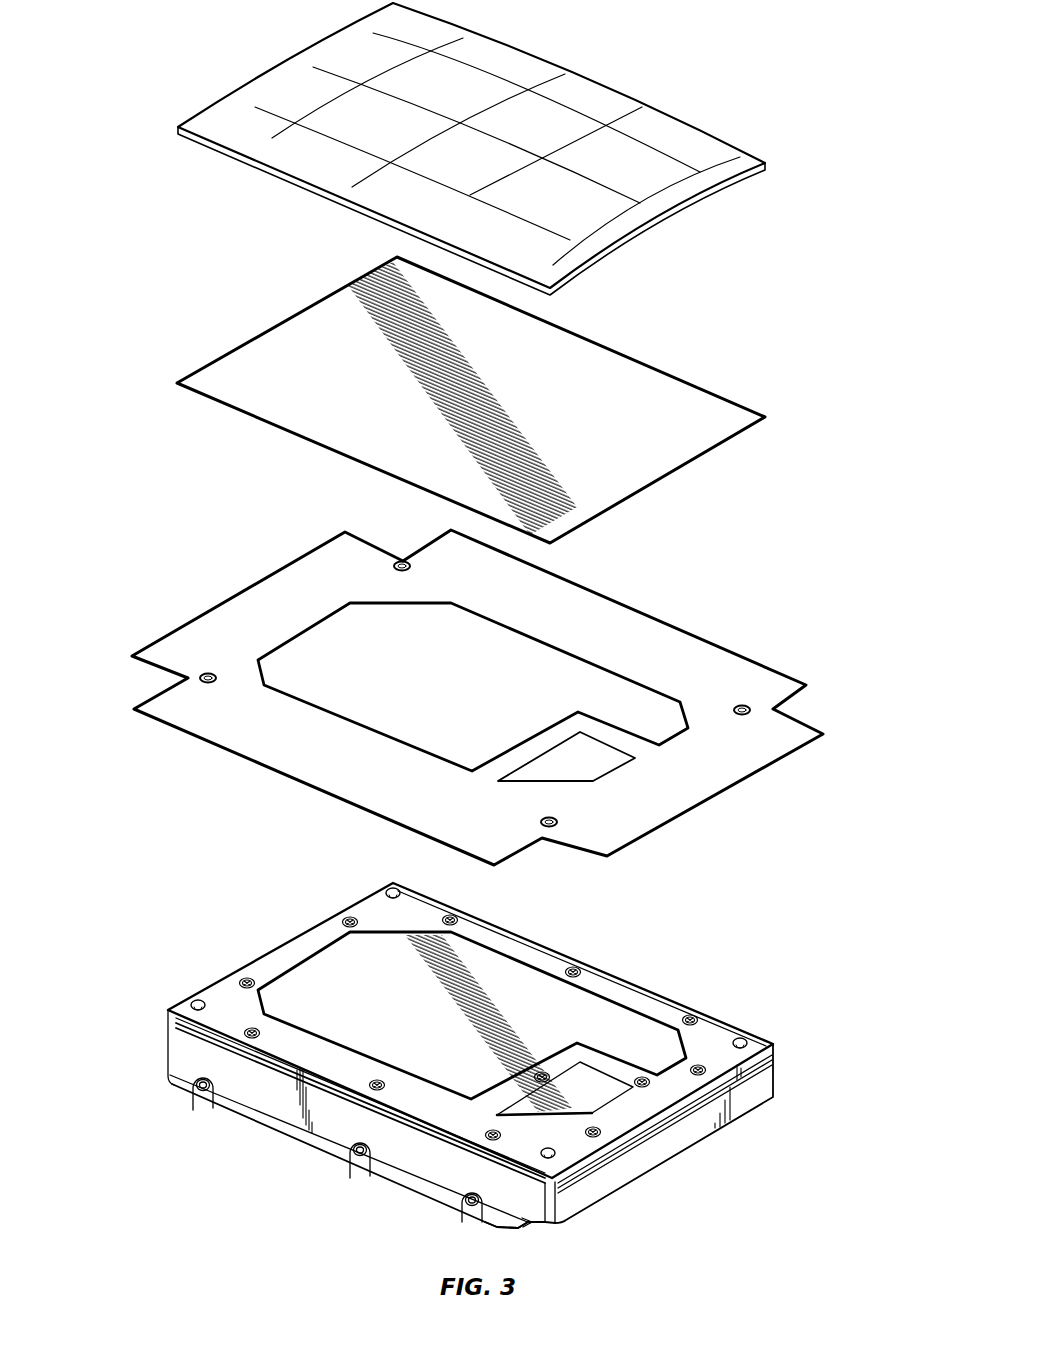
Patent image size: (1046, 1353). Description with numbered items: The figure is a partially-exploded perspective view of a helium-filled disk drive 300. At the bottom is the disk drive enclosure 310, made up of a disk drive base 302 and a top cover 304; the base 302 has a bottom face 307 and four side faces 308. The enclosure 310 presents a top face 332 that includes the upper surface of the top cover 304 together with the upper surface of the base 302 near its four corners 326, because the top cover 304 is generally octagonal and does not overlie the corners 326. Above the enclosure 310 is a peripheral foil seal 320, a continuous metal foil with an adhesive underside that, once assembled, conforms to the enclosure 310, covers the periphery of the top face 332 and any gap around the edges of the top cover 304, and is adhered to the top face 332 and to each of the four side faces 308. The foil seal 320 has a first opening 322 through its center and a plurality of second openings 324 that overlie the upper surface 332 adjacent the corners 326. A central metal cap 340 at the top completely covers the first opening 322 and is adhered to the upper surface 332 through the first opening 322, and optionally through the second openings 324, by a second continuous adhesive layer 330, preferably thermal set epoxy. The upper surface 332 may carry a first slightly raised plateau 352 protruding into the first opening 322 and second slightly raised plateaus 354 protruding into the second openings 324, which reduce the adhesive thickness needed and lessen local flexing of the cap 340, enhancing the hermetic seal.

The disk drive 300 is at (706, 78).
The disk drive base 302 is at (400, 1147).
The top cover 304 is at (281, 963).
The bottom face 307 is at (410, 1190).
The side faces 308 is at (284, 957).
The disk drive enclosure 310 is at (325, 1143).
The peripheral foil seal 320 is at (442, 688).
The first opening 322 is at (394, 709).
The second openings 324 is at (400, 557).
The corners 326 is at (392, 890).
The second continuous adhesive layer 330 is at (232, 362).
The top face 332 is at (218, 990).
The central metal cap 340 is at (267, 90).
The first slightly raised plateau 352 is at (332, 1033).
The second slightly raised plateaus 354 is at (394, 889).